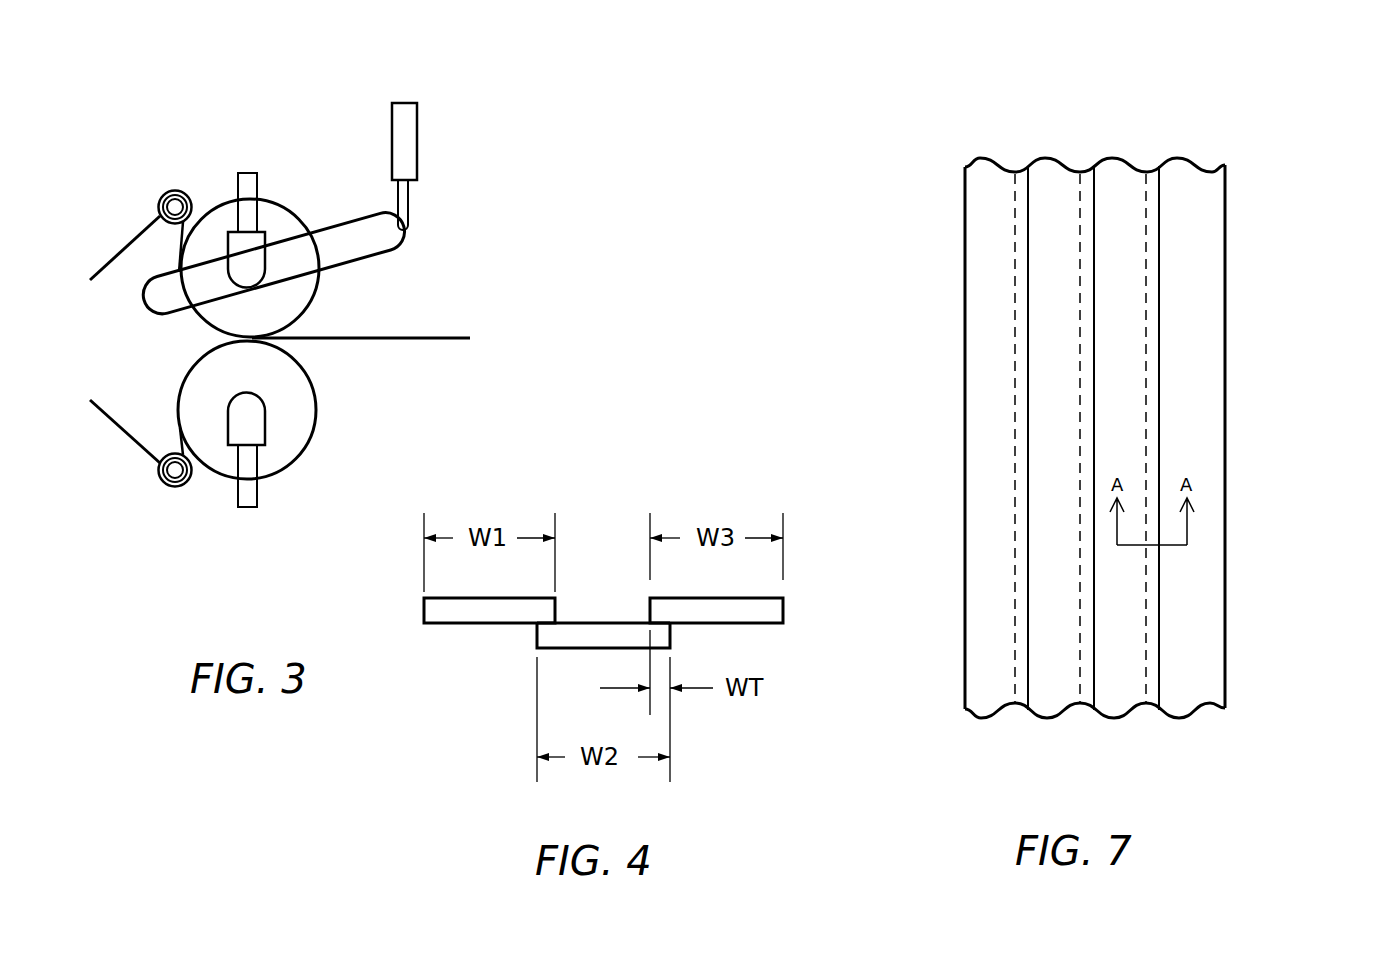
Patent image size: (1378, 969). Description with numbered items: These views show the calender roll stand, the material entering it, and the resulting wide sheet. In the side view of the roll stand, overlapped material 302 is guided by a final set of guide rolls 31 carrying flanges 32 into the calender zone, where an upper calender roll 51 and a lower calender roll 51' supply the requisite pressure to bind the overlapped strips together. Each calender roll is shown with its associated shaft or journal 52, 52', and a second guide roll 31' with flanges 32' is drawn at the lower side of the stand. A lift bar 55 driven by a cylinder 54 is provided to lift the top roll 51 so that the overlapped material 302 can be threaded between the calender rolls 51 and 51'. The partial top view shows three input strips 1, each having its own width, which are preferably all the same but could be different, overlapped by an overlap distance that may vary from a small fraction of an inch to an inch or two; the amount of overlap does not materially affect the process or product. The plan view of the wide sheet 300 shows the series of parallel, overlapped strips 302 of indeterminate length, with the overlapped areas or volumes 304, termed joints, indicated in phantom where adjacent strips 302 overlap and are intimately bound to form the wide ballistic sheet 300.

In FIG. 3, the input strip 1 is at (122, 245).
In FIG. 4, the input strip 1 is at (593, 633).
In FIG. 3, the guide roll 31 is at (131, 214).
In FIG. 3, the flange 32 is at (199, 171).
In FIG. 3, the top calender roll 51 is at (268, 253).
In FIG. 3, the upper roller shaft 52 is at (276, 213).
In FIG. 3, the cylinder 54 is at (417, 133).
In FIG. 3, the lift bar 55 is at (357, 260).
In FIG. 3, the lower calender roll 51' is at (280, 410).
In FIG. 3, the lower roller shaft 52' is at (280, 462).
In FIG. 3, the lower strip guide 31' is at (130, 456).
In FIG. 3, the lower guide roller 32' is at (180, 507).
In FIG. 7, the wide UHMWPE sheet 300 is at (1247, 365).
In FIG. 7, the strip 302 is at (1118, 177).
In FIG. 7, the overlapped area 304 is at (1022, 173).